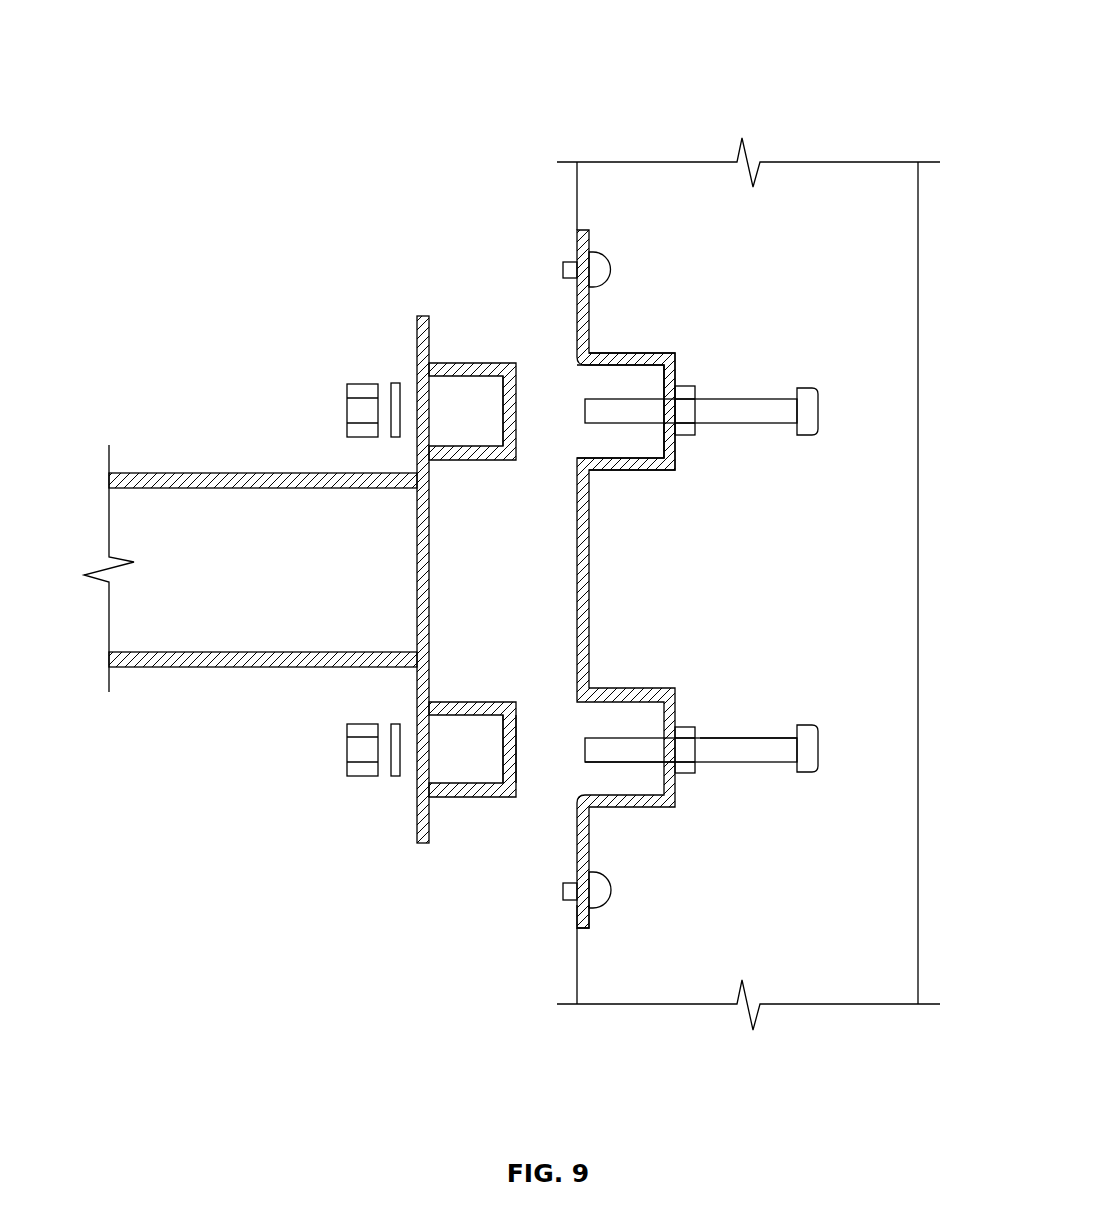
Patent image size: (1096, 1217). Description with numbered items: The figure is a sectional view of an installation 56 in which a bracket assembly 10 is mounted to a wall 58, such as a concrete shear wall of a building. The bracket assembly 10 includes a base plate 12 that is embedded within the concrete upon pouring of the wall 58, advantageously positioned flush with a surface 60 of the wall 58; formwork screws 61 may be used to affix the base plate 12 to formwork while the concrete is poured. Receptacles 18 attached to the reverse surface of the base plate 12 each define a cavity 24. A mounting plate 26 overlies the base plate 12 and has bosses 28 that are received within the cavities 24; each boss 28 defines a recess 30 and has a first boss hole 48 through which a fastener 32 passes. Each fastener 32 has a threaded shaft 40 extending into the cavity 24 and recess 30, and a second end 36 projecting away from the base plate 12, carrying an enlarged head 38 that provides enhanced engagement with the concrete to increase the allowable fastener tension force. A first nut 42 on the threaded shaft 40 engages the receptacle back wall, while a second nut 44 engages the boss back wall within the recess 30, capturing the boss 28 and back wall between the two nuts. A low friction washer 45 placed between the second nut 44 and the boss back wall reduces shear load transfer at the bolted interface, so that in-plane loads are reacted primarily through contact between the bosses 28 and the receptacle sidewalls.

The bracket assembly 10 is at (234, 48).
The base plate 12 is at (595, 612).
The receptacle 18 is at (638, 352).
The cavity 24 is at (604, 437).
The mounting plate 26 is at (420, 845).
The boss 28 is at (430, 574).
The recess 30 is at (445, 393).
The fastener 32 is at (723, 786).
The second end 36 is at (772, 735).
The enlarged head 38 is at (807, 773).
The threaded shaft 40 is at (632, 762).
The first nut 42 is at (685, 725).
The second nut 44 is at (362, 776).
The low friction washer 45 is at (395, 776).
The first boss hole 48 is at (508, 748).
The installation 56 is at (192, 357).
The wall 58 is at (903, 907).
The surface 60 is at (577, 945).
The formwork screw 61 is at (563, 268).